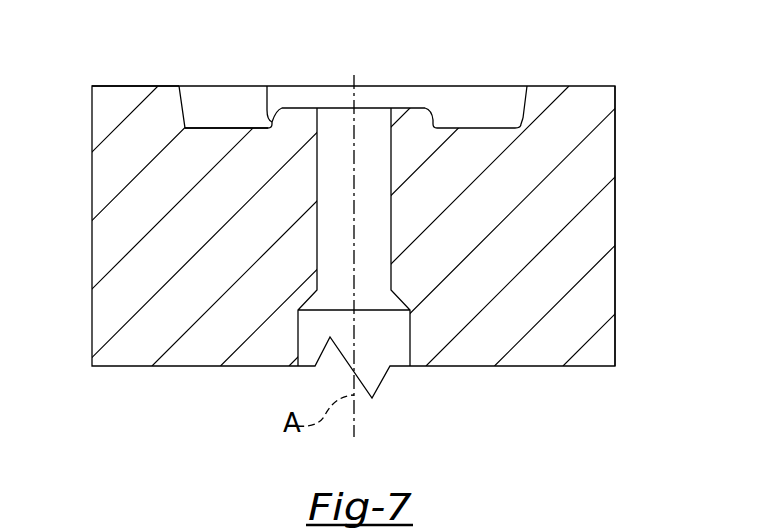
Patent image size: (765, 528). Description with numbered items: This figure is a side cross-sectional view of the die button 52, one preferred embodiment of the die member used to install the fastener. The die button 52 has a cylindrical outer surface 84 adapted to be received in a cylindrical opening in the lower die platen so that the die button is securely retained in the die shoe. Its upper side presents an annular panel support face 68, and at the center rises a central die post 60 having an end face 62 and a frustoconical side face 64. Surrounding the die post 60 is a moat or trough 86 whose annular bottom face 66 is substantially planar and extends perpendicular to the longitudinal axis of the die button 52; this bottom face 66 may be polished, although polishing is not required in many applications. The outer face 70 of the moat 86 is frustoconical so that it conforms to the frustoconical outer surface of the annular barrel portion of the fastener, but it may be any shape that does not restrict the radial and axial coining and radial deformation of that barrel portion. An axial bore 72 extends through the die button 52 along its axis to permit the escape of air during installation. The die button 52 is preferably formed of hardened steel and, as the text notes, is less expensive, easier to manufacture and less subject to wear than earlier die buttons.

The die button 52 is at (179, 263).
The central die post 60 is at (420, 124).
The end face 62 is at (302, 108).
The frustoconical side face 64 is at (267, 100).
The annular bottom face 66 is at (222, 128).
The annular panel support face 68 is at (122, 86).
The outer face of the moat 70 is at (524, 92).
The axial bore 72 is at (385, 224).
The cylindrical outer surface 84 is at (615, 122).
The moat or trough 86 is at (229, 98).